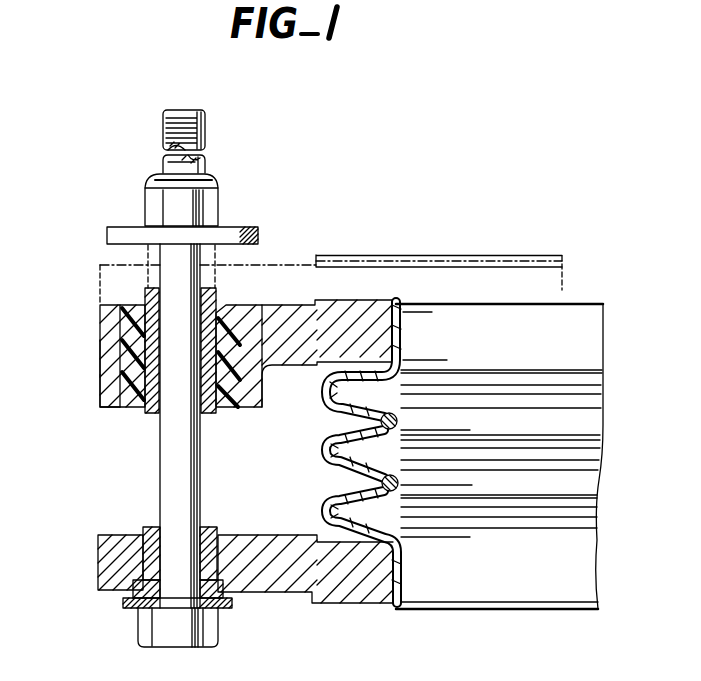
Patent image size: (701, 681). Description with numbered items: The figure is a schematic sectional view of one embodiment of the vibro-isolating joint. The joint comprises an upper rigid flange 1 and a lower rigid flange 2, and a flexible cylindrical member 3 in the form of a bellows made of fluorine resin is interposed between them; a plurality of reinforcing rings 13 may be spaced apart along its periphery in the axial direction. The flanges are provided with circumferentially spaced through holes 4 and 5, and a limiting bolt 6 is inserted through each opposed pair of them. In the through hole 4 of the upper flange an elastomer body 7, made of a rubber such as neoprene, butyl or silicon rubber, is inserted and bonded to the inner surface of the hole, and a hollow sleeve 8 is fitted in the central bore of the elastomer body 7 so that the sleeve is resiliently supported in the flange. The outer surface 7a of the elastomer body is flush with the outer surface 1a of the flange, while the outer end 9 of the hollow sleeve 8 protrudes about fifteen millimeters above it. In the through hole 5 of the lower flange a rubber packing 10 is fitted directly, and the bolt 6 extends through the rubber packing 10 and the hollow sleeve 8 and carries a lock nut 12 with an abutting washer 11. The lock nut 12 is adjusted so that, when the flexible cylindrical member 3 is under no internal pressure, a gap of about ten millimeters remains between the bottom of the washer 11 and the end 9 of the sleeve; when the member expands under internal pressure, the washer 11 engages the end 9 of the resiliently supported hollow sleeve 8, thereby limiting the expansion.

The upper rigid flange 1 is at (346, 315).
The outer surface of the flange 1a is at (283, 306).
The lower rigid flange 2 is at (278, 593).
The flexible cylindrical member 3 is at (578, 319).
The through hole 4 is at (125, 388).
The through hole 5 is at (112, 562).
The limiting bolt 6 is at (165, 477).
The elastomer body 7 is at (128, 358).
The outer surface of the elastomer body 7a is at (232, 302).
The hollow sleeve 8 is at (140, 334).
The outer end of the hollow sleeve 9 is at (146, 286).
The rubber packing 10 is at (134, 599).
The abutting washer 11 is at (123, 232).
The lock nut 12 is at (145, 180).
The reinforcing ring 13 is at (378, 424).